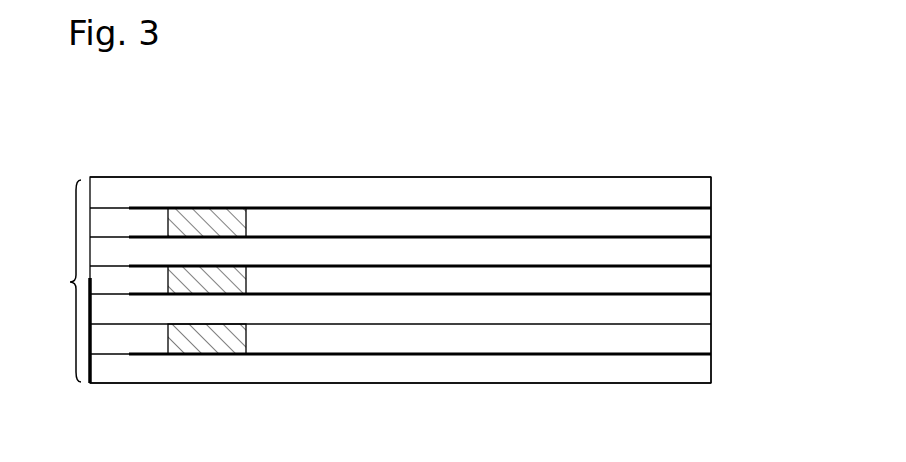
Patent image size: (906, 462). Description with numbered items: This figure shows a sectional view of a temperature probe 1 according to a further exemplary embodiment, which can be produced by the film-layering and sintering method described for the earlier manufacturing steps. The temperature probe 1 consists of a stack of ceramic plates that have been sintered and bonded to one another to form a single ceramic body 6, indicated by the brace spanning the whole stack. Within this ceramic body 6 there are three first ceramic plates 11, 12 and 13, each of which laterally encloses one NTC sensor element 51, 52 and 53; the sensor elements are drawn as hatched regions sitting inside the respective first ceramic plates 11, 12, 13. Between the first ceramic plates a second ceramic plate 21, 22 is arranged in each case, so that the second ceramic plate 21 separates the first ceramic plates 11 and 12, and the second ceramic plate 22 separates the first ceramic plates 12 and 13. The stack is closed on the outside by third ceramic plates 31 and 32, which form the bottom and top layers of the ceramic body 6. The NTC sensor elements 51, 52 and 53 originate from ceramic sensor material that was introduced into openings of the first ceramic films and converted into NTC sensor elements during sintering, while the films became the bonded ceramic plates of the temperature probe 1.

The temperature probe 1 is at (137, 162).
The ceramic body 6 is at (62, 280).
The first ceramic plate 11 is at (690, 343).
The first ceramic plate 12 is at (693, 290).
The first ceramic plate 13 is at (692, 227).
The second ceramic plate 21 is at (692, 313).
The second ceramic plate 22 is at (692, 248).
The third ceramic plate 31 is at (692, 372).
The third ceramic plate 32 is at (687, 202).
The NTC sensor element 51 is at (190, 345).
The NTC sensor element 52 is at (232, 280).
The NTC sensor element 53 is at (199, 222).